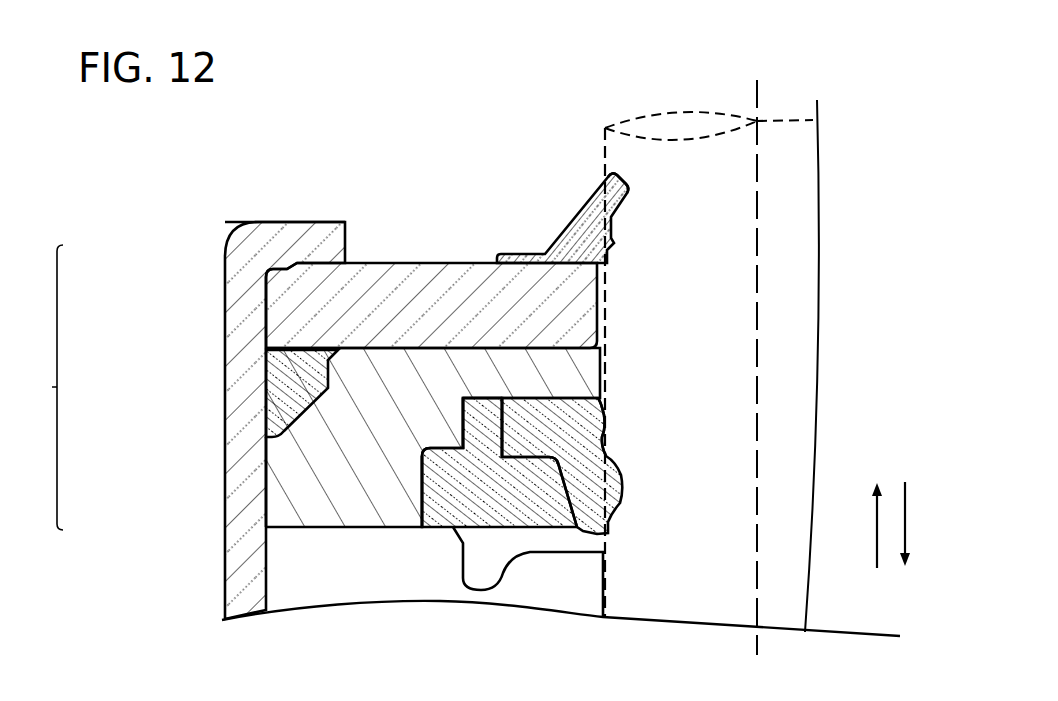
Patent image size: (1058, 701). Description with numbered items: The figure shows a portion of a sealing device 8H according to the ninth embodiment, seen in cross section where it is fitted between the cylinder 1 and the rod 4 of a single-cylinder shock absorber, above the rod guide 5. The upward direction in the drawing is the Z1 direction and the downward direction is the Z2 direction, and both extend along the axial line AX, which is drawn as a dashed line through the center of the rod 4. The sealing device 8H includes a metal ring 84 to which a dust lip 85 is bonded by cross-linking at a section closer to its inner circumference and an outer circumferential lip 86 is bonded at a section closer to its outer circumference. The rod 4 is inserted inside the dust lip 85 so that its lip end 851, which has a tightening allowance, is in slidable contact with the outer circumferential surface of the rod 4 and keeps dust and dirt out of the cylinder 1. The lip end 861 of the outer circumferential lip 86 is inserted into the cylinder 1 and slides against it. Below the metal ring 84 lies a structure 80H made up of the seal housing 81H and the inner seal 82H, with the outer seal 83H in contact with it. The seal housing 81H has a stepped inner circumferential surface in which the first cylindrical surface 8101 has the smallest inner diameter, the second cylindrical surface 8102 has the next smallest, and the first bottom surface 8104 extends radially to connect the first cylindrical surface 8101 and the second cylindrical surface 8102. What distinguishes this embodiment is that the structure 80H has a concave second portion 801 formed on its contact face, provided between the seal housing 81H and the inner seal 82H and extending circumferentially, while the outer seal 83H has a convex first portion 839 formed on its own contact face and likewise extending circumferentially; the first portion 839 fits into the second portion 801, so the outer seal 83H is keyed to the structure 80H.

The cylinder 1 is at (288, 208).
The rod 4 is at (595, 145).
The rod guide 5 is at (258, 587).
The sealing device 8H is at (40, 387).
The structure 80H is at (137, 427).
The seal housing 81H is at (256, 438).
The inner seal 82H is at (488, 418).
The outer seal 83H is at (410, 467).
The metal ring 84 is at (256, 317).
The dust lip 85 is at (488, 247).
The lip end 851 is at (603, 181).
The outer circumferential lip 86 is at (256, 369).
The lip end 861 is at (284, 425).
The first portion 839 is at (483, 398).
The second portion 801 is at (463, 427).
The first cylindrical surface 8101 is at (600, 378).
The second cylindrical surface 8102 is at (602, 438).
The first bottom surface 8104 is at (600, 406).
The axial line AX is at (760, 353).
The Z1 direction Z1 is at (879, 513).
The Z2 direction Z2 is at (908, 540).